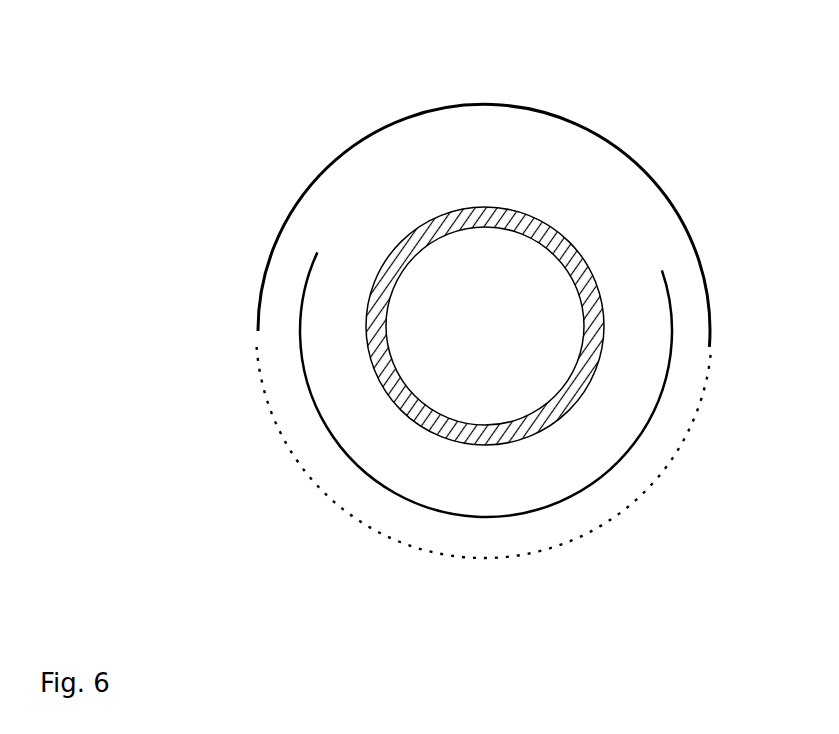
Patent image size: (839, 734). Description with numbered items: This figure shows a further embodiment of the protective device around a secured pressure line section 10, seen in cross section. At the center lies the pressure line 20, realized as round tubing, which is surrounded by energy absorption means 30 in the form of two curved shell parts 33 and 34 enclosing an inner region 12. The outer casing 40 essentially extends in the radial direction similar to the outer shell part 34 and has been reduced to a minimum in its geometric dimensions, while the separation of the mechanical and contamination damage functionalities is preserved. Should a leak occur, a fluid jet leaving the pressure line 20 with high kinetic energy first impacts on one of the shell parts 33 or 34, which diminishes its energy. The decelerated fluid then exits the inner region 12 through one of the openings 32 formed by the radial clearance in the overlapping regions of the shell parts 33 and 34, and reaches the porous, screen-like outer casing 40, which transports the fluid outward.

The pressure line section 10 is at (732, 92).
The inner region 12 is at (645, 237).
The pressure line 20 is at (462, 218).
The energy absorption means 30 is at (502, 325).
The openings 32 is at (271, 342).
The inner shell part 33 is at (528, 513).
The outer shell part 34 is at (627, 155).
The outer casing 40 is at (705, 381).